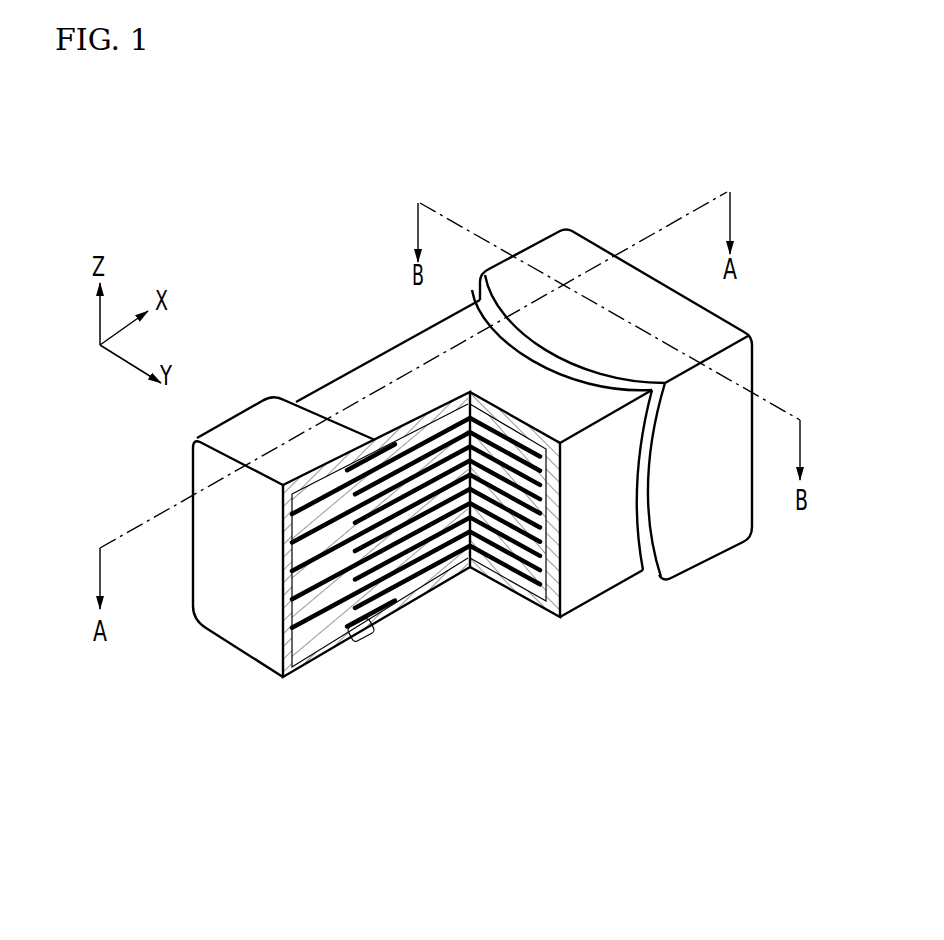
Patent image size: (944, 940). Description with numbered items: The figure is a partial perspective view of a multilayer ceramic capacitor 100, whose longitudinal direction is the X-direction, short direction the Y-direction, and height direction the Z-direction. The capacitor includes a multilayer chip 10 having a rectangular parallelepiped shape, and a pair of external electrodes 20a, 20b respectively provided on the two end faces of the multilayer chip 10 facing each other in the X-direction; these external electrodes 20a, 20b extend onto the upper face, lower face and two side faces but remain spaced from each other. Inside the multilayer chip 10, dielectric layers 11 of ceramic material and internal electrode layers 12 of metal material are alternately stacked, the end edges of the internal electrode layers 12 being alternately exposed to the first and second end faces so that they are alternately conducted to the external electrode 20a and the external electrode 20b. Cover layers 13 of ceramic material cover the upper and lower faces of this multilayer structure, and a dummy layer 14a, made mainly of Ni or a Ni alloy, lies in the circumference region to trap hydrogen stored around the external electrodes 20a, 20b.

The multilayer ceramic capacitor 100 is at (848, 169).
The multilayer chip 10 is at (338, 378).
The dielectric layer 11 is at (413, 543).
The internal electrode layer 12 is at (312, 624).
The cover layer 13 is at (413, 347).
The dummy layer 14a is at (384, 441).
The external electrode 20a is at (250, 403).
The external electrode 20b is at (570, 250).